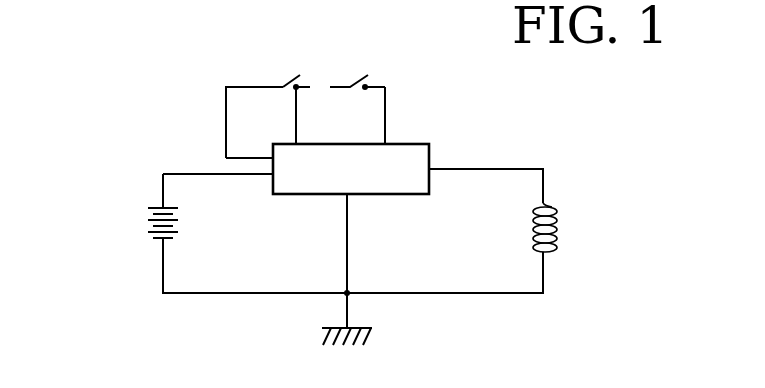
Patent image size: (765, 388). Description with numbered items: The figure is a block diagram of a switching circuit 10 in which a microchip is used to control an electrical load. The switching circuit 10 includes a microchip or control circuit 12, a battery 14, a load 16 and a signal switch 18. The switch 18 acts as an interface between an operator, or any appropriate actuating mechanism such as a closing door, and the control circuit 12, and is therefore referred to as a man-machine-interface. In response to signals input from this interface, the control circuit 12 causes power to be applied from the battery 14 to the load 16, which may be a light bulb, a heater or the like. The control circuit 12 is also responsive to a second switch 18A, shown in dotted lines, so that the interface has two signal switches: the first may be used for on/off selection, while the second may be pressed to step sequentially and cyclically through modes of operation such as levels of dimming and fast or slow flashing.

The switching circuit 10 is at (578, 170).
The microchip or control circuit 12 is at (430, 152).
The battery 14 is at (147, 222).
The load 16 is at (556, 228).
The signal switch 18 is at (350, 65).
The second switch 18A is at (277, 66).